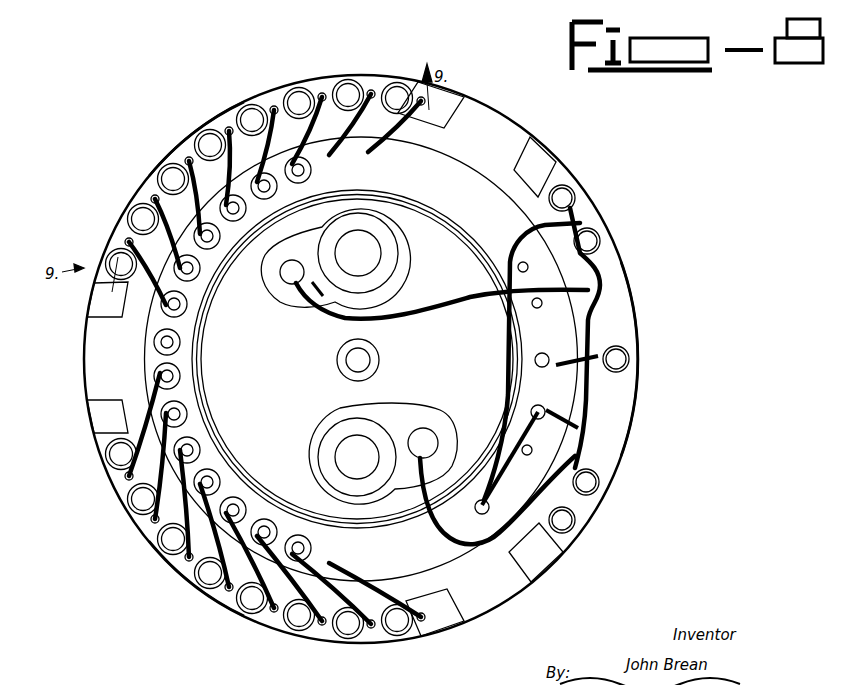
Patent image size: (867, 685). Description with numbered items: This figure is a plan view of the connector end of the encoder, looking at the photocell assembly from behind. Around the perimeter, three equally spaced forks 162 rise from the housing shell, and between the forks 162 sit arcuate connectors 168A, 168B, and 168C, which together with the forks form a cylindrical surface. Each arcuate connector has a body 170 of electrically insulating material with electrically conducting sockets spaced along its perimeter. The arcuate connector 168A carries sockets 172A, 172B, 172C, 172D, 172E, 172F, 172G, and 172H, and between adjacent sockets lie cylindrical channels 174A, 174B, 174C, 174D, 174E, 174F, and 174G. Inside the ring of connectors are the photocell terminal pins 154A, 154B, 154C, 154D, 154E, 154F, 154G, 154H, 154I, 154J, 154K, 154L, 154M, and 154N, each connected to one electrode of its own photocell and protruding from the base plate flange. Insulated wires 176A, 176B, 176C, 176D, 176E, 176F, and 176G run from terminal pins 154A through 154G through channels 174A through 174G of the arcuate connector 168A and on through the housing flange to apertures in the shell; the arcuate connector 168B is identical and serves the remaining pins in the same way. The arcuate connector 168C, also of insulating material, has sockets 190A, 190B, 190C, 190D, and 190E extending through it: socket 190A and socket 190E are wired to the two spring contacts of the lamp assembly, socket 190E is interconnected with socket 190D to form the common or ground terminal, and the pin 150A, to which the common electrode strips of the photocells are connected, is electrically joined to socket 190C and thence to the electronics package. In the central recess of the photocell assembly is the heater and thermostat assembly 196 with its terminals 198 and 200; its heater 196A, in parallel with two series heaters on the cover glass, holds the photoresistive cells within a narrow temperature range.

The fork 162 is at (89, 297).
The body 170 is at (445, 97).
The arcuate connector 168A is at (185, 128).
The arcuate connector 168B is at (183, 572).
The arcuate connector 168C is at (621, 304).
The socket 172A is at (413, 92).
The socket 172B is at (349, 79).
The socket 172C is at (299, 87).
The socket 172D is at (252, 104).
The socket 172E is at (208, 129).
The socket 172F is at (160, 170).
The socket 172G is at (128, 215).
The socket 172H is at (106, 260).
The channel 174A is at (397, 125).
The channel 174B is at (355, 124).
The channel 174C is at (312, 130).
The channel 174D is at (268, 148).
The channel 174E is at (231, 170).
The channel 174F is at (197, 200).
The channel 174G is at (169, 235).
The wire 176A is at (421, 101).
The wire 176B is at (371, 94).
The wire 176C is at (322, 97).
The wire 176D is at (274, 110).
The wire 176E is at (229, 131).
The wire 176F is at (189, 161).
The wire 176G is at (152, 270).
The terminal pin 154A is at (311, 168).
The terminal pin 154B is at (277, 189).
The terminal pin 154C is at (246, 215).
The terminal pin 154D is at (215, 248).
The terminal pin 154E is at (199, 276).
The terminal pin 154F is at (187, 306).
The terminal pin 154G is at (180, 342).
The terminal pin 154H is at (180, 376).
The terminal pin 154I is at (185, 408).
The terminal pin 154J is at (196, 440).
The terminal pin 154K is at (214, 470).
The terminal pin 154L is at (243, 498).
The terminal pin 154M is at (264, 519).
The terminal pin 154N is at (311, 550).
The socket 190A is at (576, 522).
The socket 190B is at (600, 484).
The socket 190C is at (630, 360).
The socket 190D is at (600, 241).
The socket 190E is at (574, 198).
The heater and thermostat assembly 196 is at (437, 366).
The heater 196A is at (417, 208).
The terminal 198 is at (287, 300).
The terminal 200 is at (392, 410).
The pin 150A is at (535, 360).